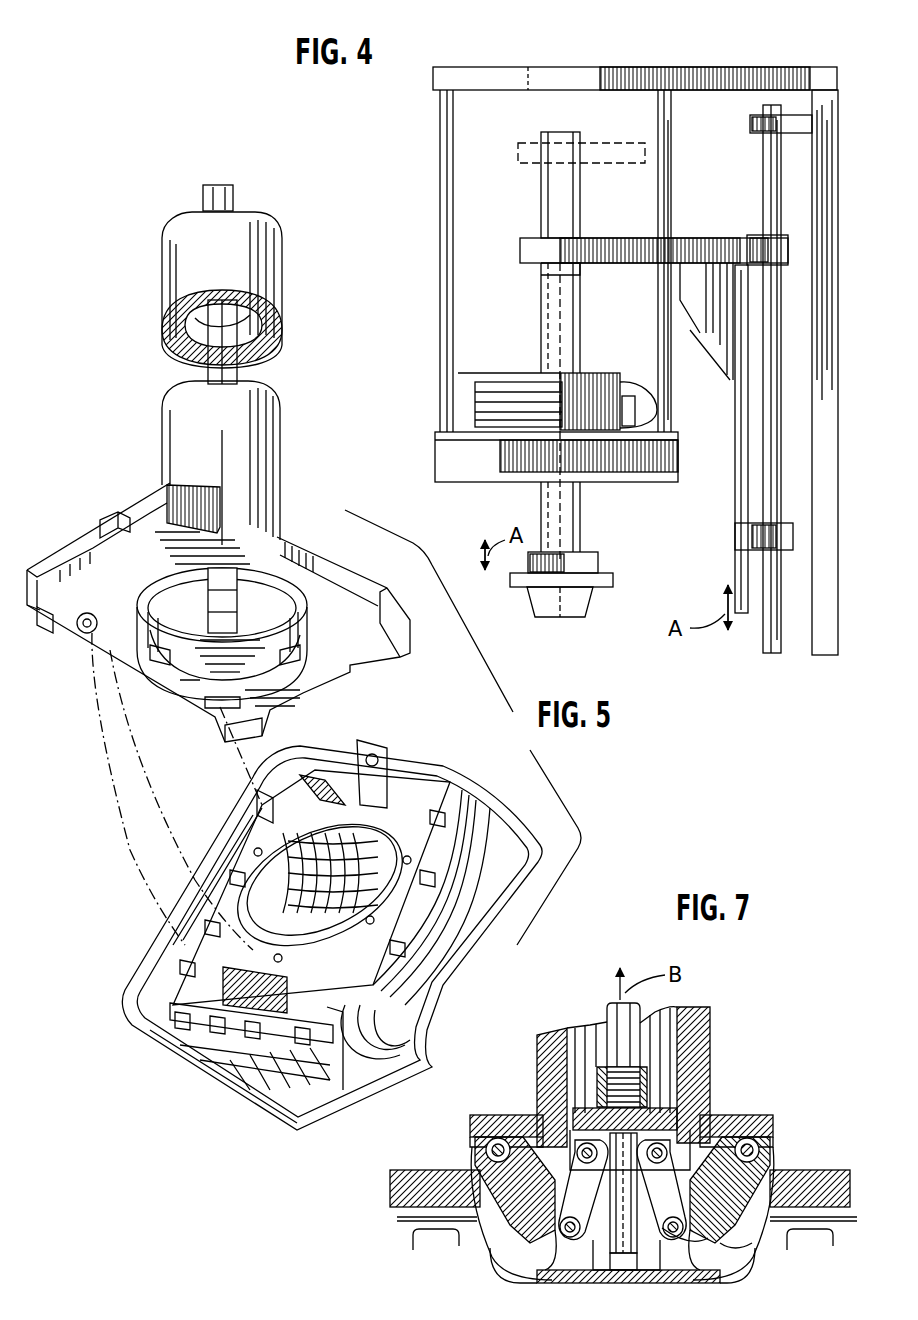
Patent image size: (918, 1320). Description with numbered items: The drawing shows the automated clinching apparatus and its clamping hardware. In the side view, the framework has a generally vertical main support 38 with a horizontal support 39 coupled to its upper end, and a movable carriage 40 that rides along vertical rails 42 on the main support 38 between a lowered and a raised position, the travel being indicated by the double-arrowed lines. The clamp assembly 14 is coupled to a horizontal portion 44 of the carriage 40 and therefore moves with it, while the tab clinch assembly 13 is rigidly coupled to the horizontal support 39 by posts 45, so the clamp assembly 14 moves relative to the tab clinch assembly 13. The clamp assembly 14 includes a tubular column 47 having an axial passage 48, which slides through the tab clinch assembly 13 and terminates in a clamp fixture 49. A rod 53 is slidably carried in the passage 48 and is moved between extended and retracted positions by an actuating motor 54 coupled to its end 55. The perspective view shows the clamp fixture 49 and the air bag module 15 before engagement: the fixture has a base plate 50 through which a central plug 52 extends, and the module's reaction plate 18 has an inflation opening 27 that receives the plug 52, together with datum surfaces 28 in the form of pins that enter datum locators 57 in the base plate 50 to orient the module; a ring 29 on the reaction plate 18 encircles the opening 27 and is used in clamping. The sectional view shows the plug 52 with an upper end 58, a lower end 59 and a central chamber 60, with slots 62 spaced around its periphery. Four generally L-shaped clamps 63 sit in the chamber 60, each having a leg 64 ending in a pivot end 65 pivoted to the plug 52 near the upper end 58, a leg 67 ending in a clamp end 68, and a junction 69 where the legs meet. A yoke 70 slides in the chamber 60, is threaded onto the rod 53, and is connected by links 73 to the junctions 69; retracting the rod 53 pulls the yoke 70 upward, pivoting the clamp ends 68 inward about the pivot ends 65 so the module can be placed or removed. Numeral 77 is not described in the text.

In FIG. 5, the tab clinch assembly 13 is at (432, 460).
In FIG. 5, the clamp assembly 14 is at (600, 525).
In FIG. 4, the air bag module 15 is at (455, 752).
In FIG. 4, the reaction plate 18 is at (463, 787).
In FIG. 4, the inflation opening 27 is at (372, 838).
In FIG. 4, the datum surfaces 28 is at (262, 800).
In FIG. 7, the ring 29 is at (828, 1246).
In FIG. 5, the main support 38 is at (822, 155).
In FIG. 5, the horizontal support 39 is at (708, 60).
In FIG. 5, the movable carriage 40 is at (735, 483).
In FIG. 5, the vertical rails 42 is at (770, 306).
In FIG. 5, the horizontal portion 44 is at (600, 238).
In FIG. 5, the posts 45 is at (440, 266).
In FIG. 4, the tubular column 47 is at (278, 400).
In FIG. 5, the tubular column 47 is at (541, 302).
In FIG. 7, the tubular column 47 is at (700, 1022).
In FIG. 4, the axial passage 48 is at (285, 318).
In FIG. 5, the axial passage 48 is at (541, 495).
In FIG. 7, the axial passage 48 is at (655, 1022).
In FIG. 4, the clamp fixture 49 is at (73, 667).
In FIG. 5, the clamp fixture 49 is at (615, 577).
In FIG. 4, the base plate 50 is at (307, 560).
In FIG. 4, the central plug 52 is at (180, 695).
In FIG. 7, the central plug 52 is at (545, 1278).
In FIG. 4, the rod 53 is at (208, 355).
In FIG. 5, the actuating motor 54 is at (541, 212).
In FIG. 5, the end 55 is at (541, 270).
In FIG. 4, the datum locators 57 is at (77, 627).
In FIG. 7, the upper end 58 is at (733, 1115).
In FIG. 7, the lower end 59 is at (672, 1272).
In FIG. 7, the central chamber 60 is at (612, 1262).
In FIG. 4, the slots 62 is at (225, 592).
In FIG. 7, the slots 62 is at (475, 1252).
In FIG. 7, the clamps 63 is at (493, 1280).
In FIG. 7, the leg 64 is at (755, 1180).
In FIG. 7, the pivot end 65 is at (765, 1138).
In FIG. 7, the leg 67 is at (700, 1240).
In FIG. 7, the clamp end 68 is at (730, 1247).
In FIG. 7, the junction 69 is at (640, 1272).
In FIG. 7, the yoke 70 is at (603, 1113).
In FIG. 7, the links 73 is at (520, 1168).
In FIG. 7, the threaded member 77 is at (603, 1062).